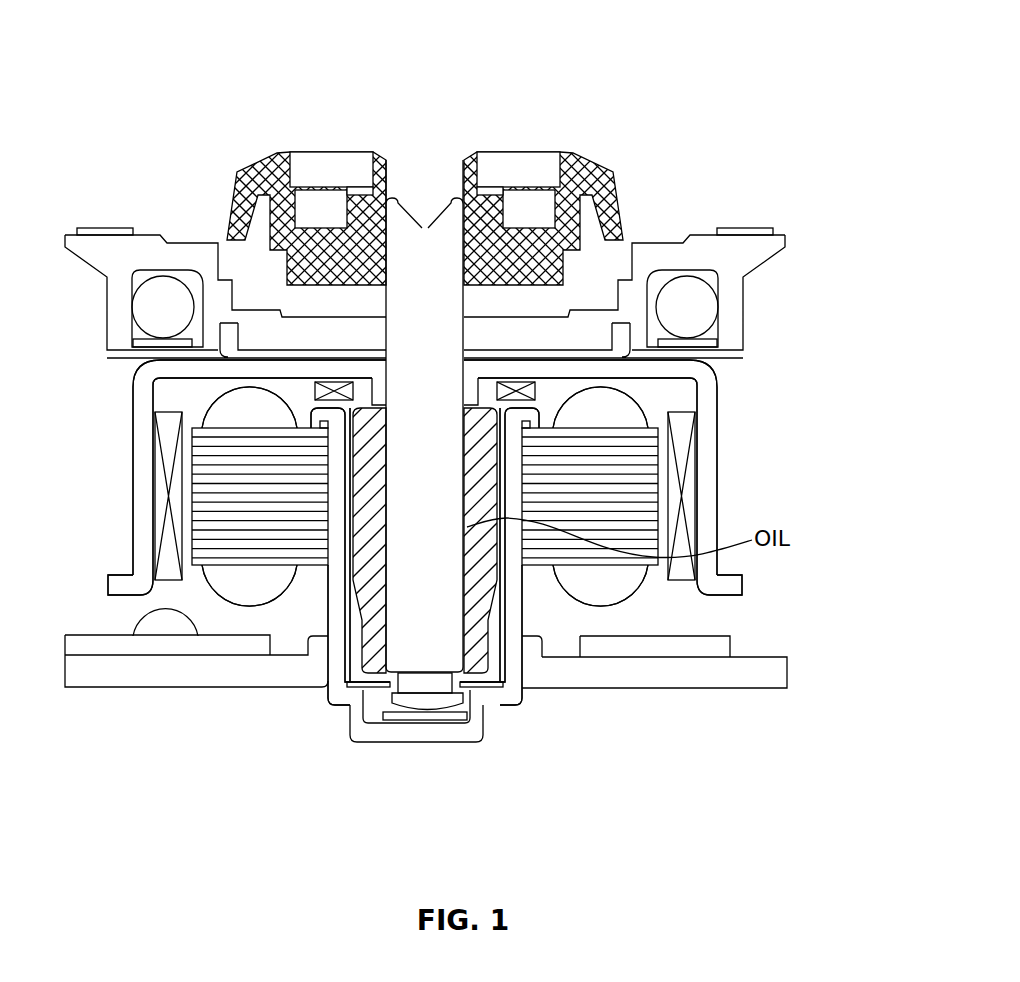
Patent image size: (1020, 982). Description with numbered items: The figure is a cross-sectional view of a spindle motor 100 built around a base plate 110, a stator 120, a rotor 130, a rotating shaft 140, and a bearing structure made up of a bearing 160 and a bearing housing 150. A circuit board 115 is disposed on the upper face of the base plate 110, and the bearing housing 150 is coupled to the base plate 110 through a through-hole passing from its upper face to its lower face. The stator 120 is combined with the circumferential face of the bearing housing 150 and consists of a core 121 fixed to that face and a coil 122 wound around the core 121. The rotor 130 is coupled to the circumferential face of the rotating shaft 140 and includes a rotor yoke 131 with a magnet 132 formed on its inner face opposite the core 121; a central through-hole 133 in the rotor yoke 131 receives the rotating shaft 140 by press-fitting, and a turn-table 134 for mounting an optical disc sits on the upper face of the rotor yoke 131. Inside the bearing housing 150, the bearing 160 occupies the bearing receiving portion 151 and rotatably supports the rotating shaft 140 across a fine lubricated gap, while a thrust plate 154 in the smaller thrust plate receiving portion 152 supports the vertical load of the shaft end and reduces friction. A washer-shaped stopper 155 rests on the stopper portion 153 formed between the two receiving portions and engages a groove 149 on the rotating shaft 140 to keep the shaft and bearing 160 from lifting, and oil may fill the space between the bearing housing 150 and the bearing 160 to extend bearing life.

The spindle motor 100 is at (573, 34).
The base plate 110 is at (765, 680).
The circuit board 115 is at (718, 643).
The stator 120 is at (645, 606).
The core 121 is at (550, 553).
The coil 122 is at (605, 607).
The rotor 130 is at (740, 494).
The rotor yoke 131 is at (718, 390).
The magnet 132 is at (692, 464).
The through-hole 133 is at (402, 372).
The turn-table 134 is at (733, 229).
The rotating shaft 140 is at (433, 238).
The groove 149 is at (473, 690).
The bearing housing 150 is at (335, 542).
The bearing receiving portion 151 is at (353, 648).
The thrust plate receiving portion 152 is at (392, 712).
The stopper portion 153 is at (508, 688).
The thrust plate 154 is at (428, 720).
The stopper 155 is at (362, 688).
The bearing 160 is at (358, 503).